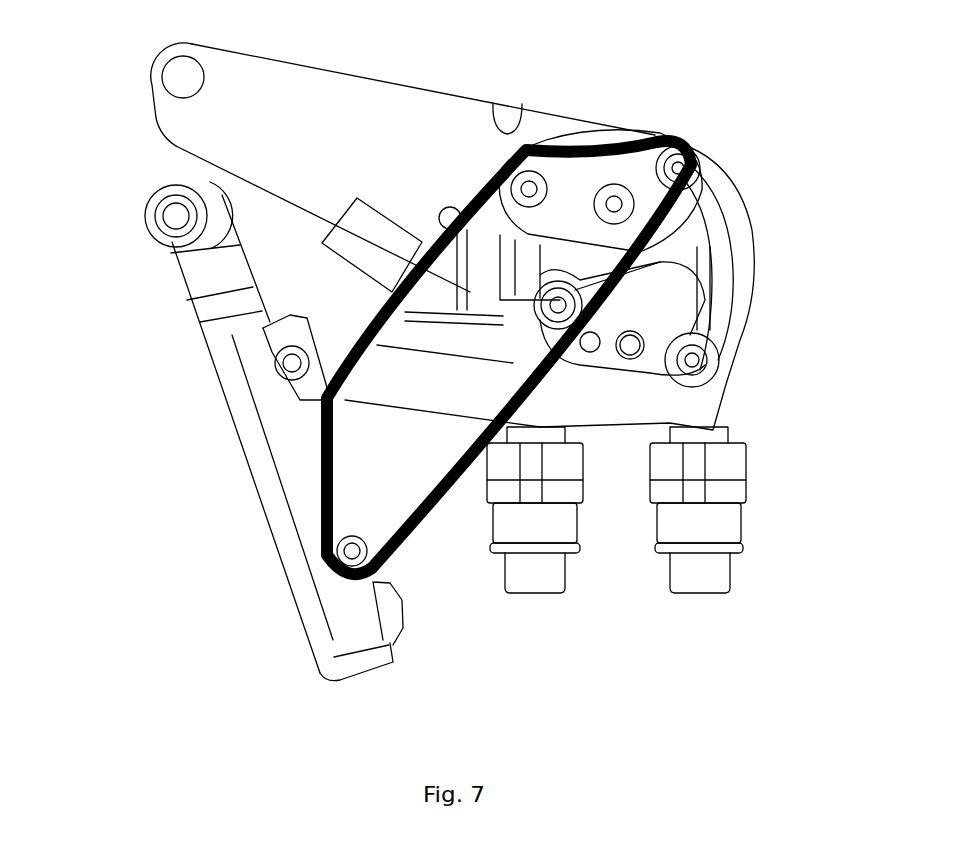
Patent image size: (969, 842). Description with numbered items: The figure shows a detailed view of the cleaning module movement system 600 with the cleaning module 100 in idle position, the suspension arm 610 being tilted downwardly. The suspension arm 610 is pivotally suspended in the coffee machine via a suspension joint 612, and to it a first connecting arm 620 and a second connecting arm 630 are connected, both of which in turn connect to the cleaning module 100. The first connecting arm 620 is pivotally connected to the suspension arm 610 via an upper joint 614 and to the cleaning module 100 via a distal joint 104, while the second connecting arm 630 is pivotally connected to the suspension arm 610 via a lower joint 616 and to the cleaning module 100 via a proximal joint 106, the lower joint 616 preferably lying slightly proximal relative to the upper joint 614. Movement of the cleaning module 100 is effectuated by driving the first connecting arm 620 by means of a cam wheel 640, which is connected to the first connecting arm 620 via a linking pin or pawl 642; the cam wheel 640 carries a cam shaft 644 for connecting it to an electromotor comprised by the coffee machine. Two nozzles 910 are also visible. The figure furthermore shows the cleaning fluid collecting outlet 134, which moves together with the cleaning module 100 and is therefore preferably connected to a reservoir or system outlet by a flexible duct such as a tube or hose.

The cleaning module movement system 600 is at (886, 684).
The suspension arm 610 is at (182, 127).
The suspension joint 612 is at (175, 75).
The cleaning fluid collecting outlet 134 is at (160, 198).
The distal joint 104 is at (290, 363).
The cleaning module 100 is at (255, 477).
The proximal joint 106 is at (350, 553).
The cam wheel 640 is at (697, 227).
The first connecting arm 620 is at (595, 157).
The upper joint 614 is at (678, 170).
The cam shaft 644 is at (637, 282).
The linking pin or pawl 642 is at (568, 310).
The lower joint 616 is at (693, 362).
The second connecting arm 630 is at (668, 422).
The nozzles 910 is at (583, 505).